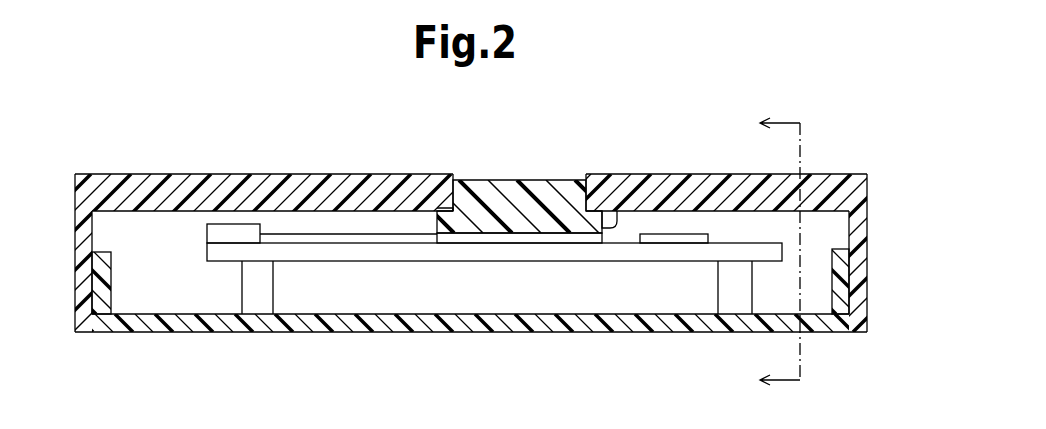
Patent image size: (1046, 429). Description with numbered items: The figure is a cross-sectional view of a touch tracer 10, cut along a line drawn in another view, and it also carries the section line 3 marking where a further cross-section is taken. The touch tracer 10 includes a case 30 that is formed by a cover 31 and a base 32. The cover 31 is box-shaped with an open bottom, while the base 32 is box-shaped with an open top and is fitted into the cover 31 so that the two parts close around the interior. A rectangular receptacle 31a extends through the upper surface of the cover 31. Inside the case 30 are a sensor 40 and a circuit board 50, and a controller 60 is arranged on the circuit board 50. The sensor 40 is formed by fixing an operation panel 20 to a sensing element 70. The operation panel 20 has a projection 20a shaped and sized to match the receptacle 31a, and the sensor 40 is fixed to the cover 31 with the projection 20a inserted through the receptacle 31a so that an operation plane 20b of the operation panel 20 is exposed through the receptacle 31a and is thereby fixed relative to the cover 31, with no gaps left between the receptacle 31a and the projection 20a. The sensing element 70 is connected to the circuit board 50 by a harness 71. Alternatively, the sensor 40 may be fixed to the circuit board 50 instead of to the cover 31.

The touch tracer 10 is at (723, 73).
The operation panel 20 is at (617, 187).
The projection 20a is at (571, 183).
The operation plane 20b is at (510, 180).
The case 30 is at (123, 380).
The cover 31 is at (76, 316).
The rectangular receptacle 31a is at (458, 181).
The base 32 is at (110, 333).
The sensor 40 is at (434, 213).
The circuit board 50 is at (578, 262).
The controller 60 is at (704, 234).
The sensing element 70 is at (492, 244).
The harness 71 is at (318, 233).
The section line 3- 3 is at (766, 254).